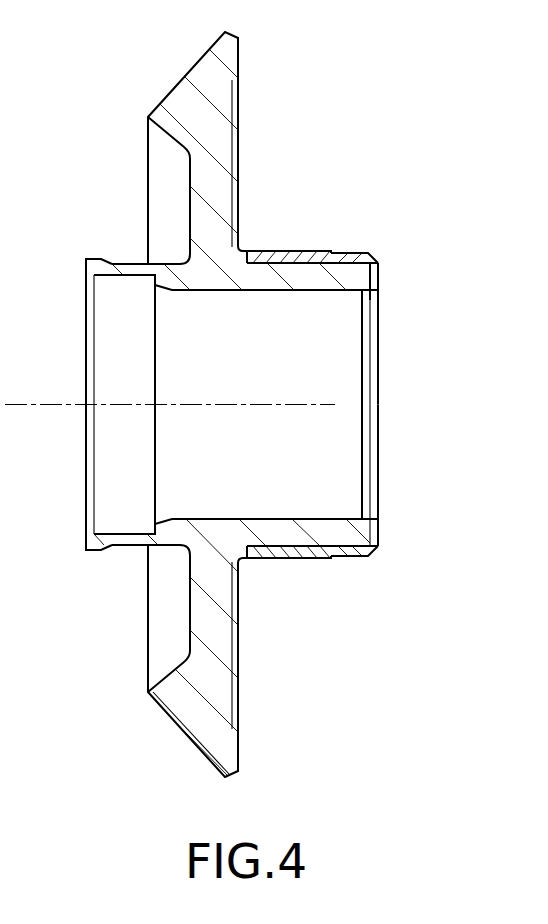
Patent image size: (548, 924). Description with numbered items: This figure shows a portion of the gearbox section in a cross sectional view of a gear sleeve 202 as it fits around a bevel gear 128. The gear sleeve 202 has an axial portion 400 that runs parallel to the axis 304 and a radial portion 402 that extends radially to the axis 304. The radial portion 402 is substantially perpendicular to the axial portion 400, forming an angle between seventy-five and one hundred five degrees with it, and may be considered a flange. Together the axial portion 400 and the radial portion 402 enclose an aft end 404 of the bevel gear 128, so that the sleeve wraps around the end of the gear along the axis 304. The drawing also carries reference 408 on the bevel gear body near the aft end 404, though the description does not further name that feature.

The bevel gear 128 is at (232, 58).
The gear sleeve 202 is at (298, 262).
The axial portion 400 is at (342, 262).
The radial portion 402 is at (378, 273).
The aft end 404 is at (377, 377).
The bore end wall 408 is at (360, 462).
The axis 304 is at (270, 404).